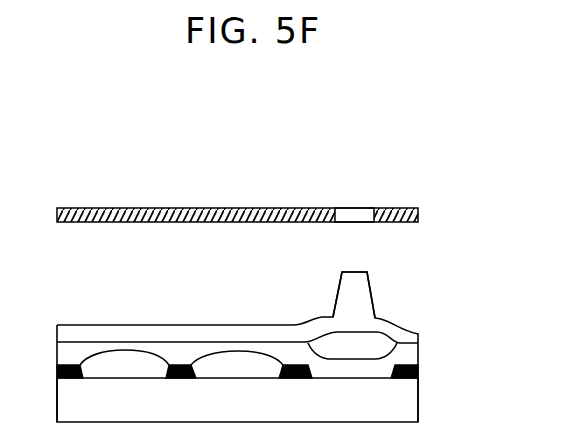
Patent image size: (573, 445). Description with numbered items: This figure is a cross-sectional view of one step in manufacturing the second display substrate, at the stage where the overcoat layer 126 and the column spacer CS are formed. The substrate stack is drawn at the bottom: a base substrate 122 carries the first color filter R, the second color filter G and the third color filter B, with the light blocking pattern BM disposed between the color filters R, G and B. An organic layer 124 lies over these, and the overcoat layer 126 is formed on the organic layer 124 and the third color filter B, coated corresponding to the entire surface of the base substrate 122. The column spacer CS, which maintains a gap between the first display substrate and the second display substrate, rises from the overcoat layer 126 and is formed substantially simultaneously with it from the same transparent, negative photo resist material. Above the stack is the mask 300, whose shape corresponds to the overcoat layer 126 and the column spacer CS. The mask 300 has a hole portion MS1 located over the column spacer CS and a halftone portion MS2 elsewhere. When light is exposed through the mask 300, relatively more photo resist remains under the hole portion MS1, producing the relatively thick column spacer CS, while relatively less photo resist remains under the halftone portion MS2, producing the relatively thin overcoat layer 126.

The mask 300 is at (418, 212).
The halftone portion MS2 is at (203, 210).
The hole portion MS1 is at (351, 212).
The base substrate 122 is at (418, 403).
The light blocking pattern BM is at (418, 372).
The first color filter R is at (124, 362).
The second color filter G is at (237, 363).
The third color filter B is at (352, 350).
The organic layer 124 is at (418, 353).
The overcoat layer 126 is at (418, 336).
The column spacer CS is at (369, 289).